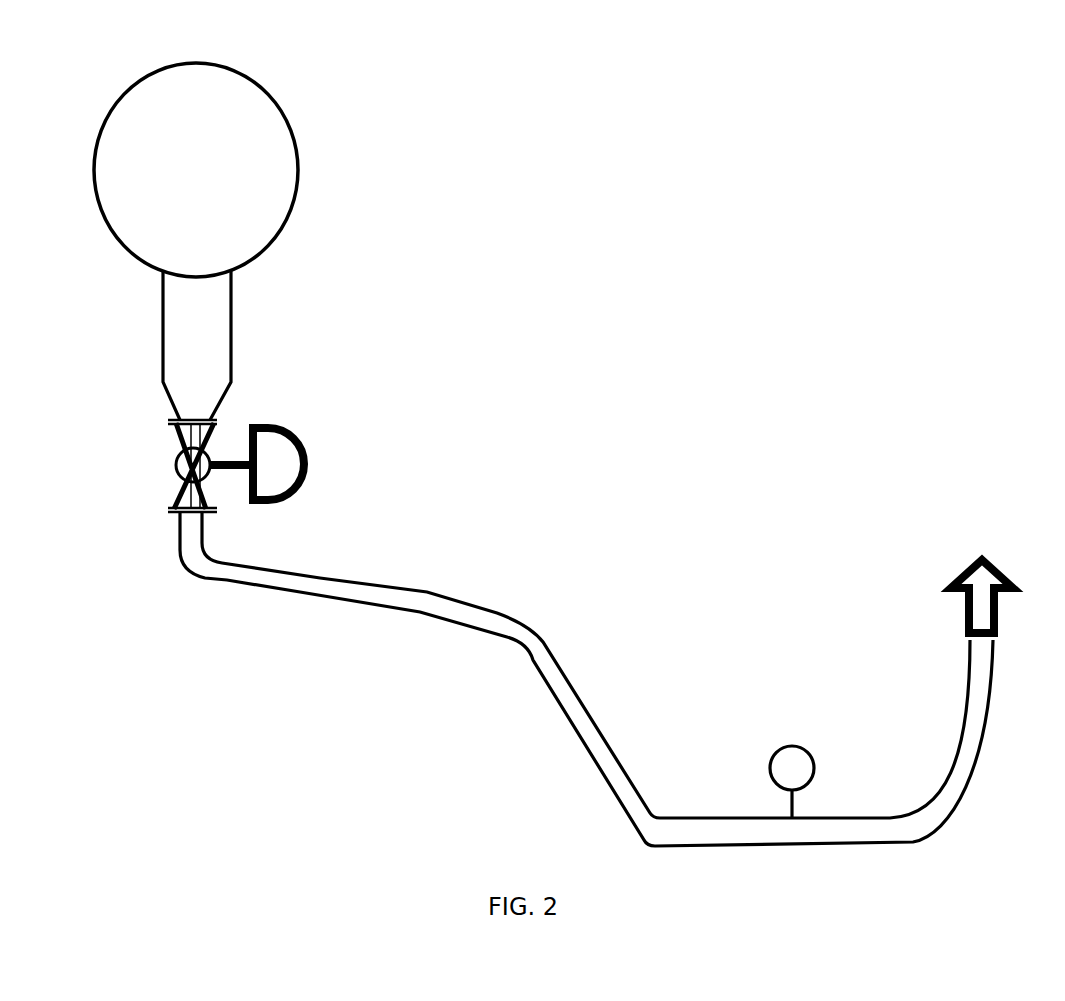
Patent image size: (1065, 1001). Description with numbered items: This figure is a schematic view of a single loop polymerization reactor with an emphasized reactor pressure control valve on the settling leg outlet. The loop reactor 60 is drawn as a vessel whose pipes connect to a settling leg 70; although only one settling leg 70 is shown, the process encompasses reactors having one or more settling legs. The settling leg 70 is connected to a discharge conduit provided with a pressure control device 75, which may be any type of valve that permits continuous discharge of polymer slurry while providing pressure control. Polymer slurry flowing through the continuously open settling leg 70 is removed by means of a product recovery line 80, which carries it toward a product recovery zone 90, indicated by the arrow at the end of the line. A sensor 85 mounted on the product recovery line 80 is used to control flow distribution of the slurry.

The loop reactor 60 is at (278, 182).
The settling leg 70 is at (215, 361).
The pressure control device 75 is at (278, 458).
The product recovery line 80 is at (422, 602).
The sensor 85 is at (797, 762).
The product recovery zone 90 is at (980, 580).